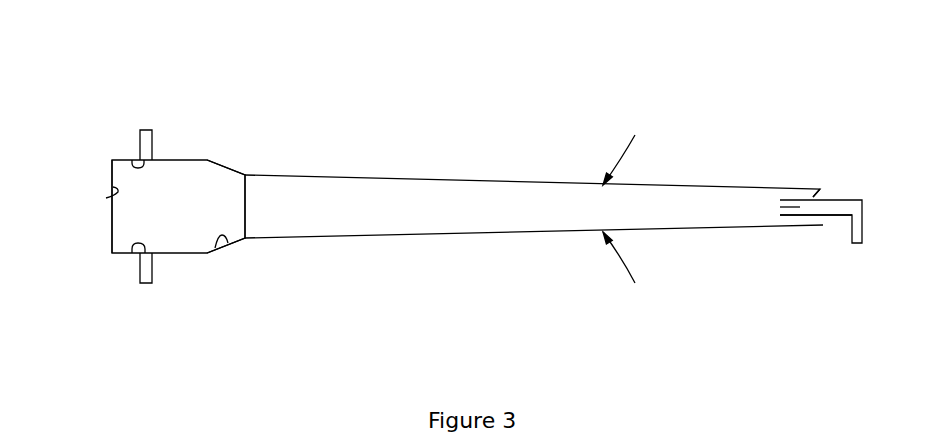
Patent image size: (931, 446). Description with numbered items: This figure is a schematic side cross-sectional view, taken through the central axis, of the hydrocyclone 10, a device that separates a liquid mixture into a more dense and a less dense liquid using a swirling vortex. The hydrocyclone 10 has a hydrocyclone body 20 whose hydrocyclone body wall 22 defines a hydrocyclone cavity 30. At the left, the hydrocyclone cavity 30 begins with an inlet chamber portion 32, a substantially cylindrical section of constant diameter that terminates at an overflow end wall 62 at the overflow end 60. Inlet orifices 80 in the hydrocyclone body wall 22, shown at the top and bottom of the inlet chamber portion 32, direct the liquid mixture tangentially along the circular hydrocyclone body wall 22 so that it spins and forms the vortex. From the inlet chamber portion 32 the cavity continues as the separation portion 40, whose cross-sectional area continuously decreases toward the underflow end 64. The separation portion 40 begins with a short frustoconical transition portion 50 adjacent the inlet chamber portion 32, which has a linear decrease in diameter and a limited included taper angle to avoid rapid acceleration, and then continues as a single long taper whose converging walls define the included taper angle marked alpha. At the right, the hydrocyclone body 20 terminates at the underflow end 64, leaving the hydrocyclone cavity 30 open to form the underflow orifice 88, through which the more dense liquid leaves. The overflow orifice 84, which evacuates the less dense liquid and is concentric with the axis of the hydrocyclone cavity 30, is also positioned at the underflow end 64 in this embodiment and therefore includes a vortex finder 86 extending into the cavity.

The hydrocyclone 10 is at (538, 103).
The hydrocyclone body 20 is at (180, 253).
The hydrocyclone body wall 22 is at (227, 243).
The hydrocyclone cavity 30 is at (337, 198).
The inlet chamber portion 32 is at (188, 175).
The separation portion 40 is at (313, 103).
The transition portion 50 is at (227, 183).
The overflow end 60 is at (110, 233).
The overflow end wall 62 is at (106, 198).
The underflow end 64 is at (822, 190).
The inlet orifice 80 is at (132, 160).
The overflow orifice 84 is at (780, 207).
The vortex finder 86 is at (803, 213).
The underflow orifice 88 is at (812, 197).